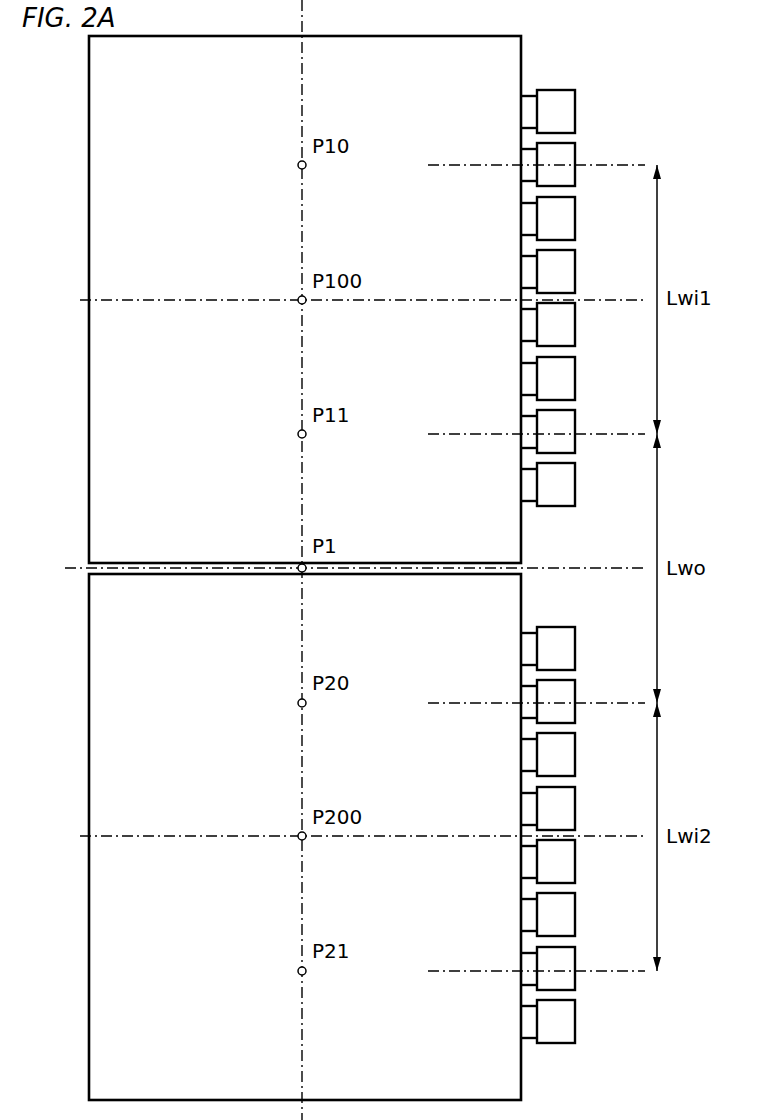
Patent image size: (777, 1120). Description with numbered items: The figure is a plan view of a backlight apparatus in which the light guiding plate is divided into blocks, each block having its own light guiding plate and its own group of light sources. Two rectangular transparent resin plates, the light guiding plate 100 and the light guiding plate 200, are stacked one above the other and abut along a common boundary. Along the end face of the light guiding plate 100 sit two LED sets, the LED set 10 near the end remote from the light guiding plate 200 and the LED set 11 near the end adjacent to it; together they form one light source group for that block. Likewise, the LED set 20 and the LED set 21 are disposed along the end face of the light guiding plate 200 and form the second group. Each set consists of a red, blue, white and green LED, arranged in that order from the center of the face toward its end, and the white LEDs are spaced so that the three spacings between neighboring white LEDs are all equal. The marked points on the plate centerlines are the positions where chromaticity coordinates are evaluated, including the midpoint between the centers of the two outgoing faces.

The light guiding plate 100 is at (521, 40).
The light guiding plate 200 is at (521, 580).
The LED set 10 is at (590, 93).
The LED set 11 is at (590, 306).
The LED set 20 is at (590, 630).
The LED set 21 is at (590, 843).